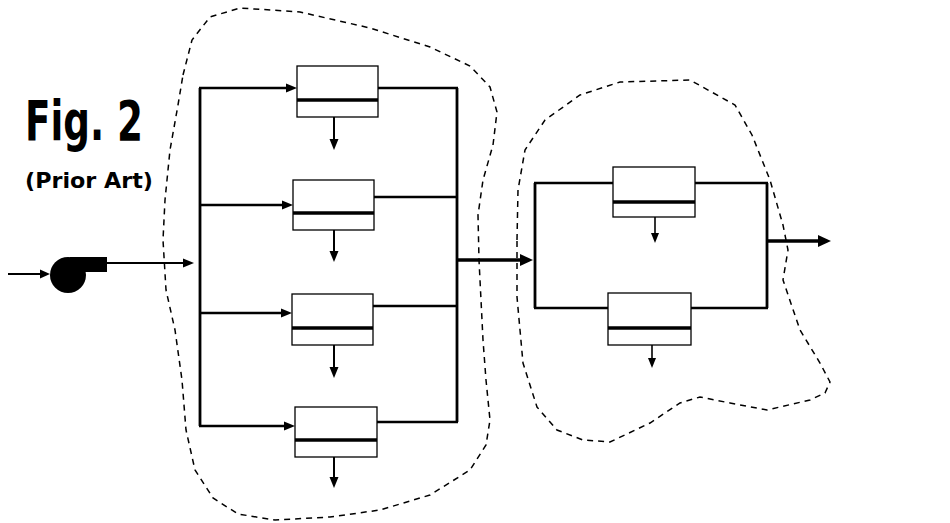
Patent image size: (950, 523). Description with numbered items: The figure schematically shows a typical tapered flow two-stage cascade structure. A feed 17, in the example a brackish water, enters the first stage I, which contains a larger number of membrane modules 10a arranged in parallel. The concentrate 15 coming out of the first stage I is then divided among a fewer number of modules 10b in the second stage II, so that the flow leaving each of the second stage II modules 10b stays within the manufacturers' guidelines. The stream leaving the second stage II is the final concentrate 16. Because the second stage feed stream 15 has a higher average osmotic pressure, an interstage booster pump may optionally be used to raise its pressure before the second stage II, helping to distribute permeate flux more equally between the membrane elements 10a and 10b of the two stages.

The modules 10a is at (296, 68).
The modules 10b is at (640, 167).
The concentrate 15 is at (495, 258).
The final concentrate 16 is at (800, 240).
The feed 17 is at (145, 263).
The first stage I is at (465, 70).
The second stage II is at (740, 106).